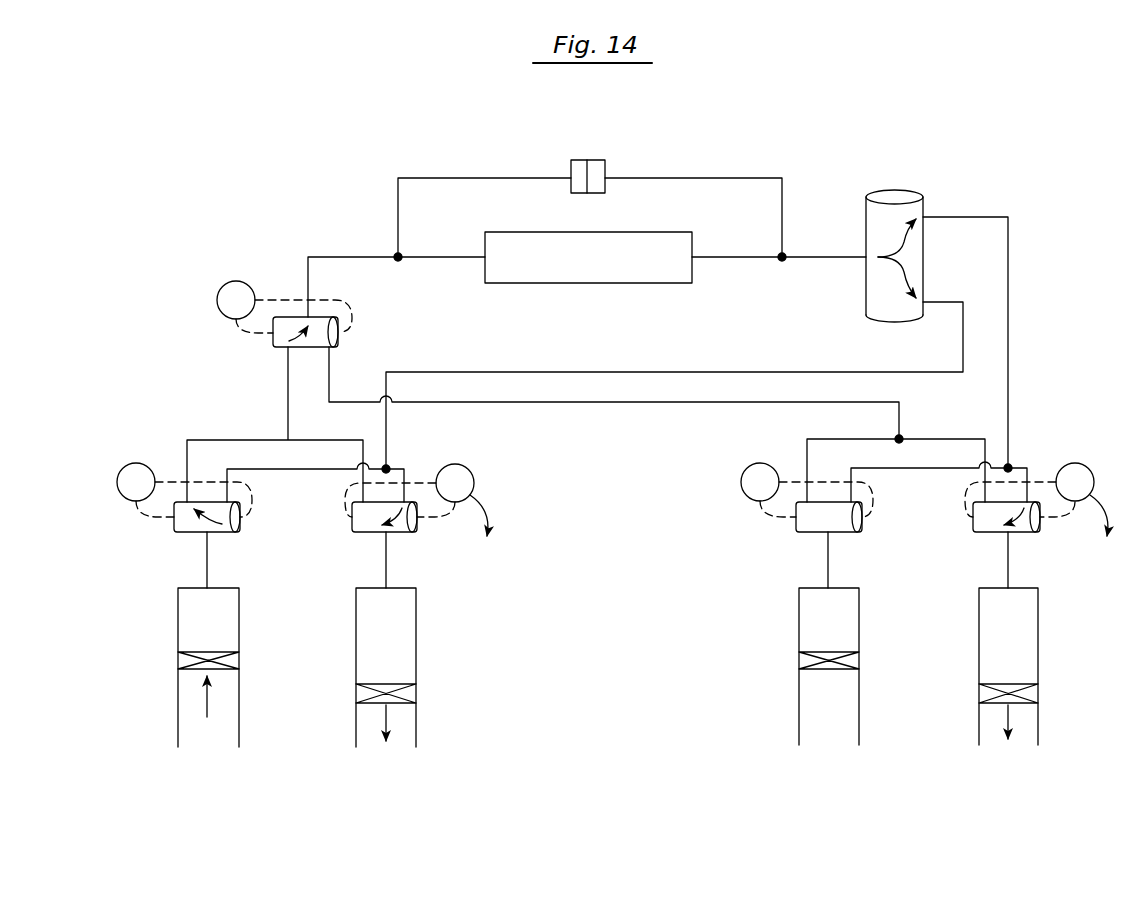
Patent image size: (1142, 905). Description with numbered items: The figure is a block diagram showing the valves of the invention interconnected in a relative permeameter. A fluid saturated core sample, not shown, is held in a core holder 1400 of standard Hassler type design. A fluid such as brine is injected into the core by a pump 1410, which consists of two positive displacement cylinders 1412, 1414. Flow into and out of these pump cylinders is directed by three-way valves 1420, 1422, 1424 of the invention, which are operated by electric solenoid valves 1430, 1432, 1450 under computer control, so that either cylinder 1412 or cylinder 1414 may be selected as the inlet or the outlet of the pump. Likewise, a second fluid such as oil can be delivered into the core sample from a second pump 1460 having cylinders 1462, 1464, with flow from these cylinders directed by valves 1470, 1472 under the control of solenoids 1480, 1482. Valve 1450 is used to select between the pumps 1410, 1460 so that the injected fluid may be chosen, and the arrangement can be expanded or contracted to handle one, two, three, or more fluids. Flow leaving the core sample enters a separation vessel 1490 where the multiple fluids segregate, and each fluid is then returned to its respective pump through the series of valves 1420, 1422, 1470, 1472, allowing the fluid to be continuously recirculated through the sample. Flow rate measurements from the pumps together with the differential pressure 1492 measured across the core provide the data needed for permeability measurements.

The core holder 1400 is at (625, 232).
The differential pressure 1492 is at (571, 165).
The separation vessel 1490 is at (924, 174).
The valve 1450 is at (221, 288).
The 3-way valve 1424 is at (273, 346).
The electric solenoid valve 1430 is at (123, 497).
The 3-way valve 1420 is at (190, 534).
The 3-way valve 1422 is at (375, 534).
The electric solenoid valve 1432 is at (443, 470).
The pump 1410 is at (158, 619).
The positive displacement cylinder 1412 is at (275, 627).
The positive displacement cylinder 1414 is at (452, 628).
The solenoid 1480 is at (741, 478).
The valve 1470 is at (797, 534).
The valve 1472 is at (986, 534).
The solenoid 1482 is at (1072, 468).
The second pump 1460 is at (756, 634).
The cylinder 1462 is at (897, 702).
The cylinder 1464 is at (1040, 637).